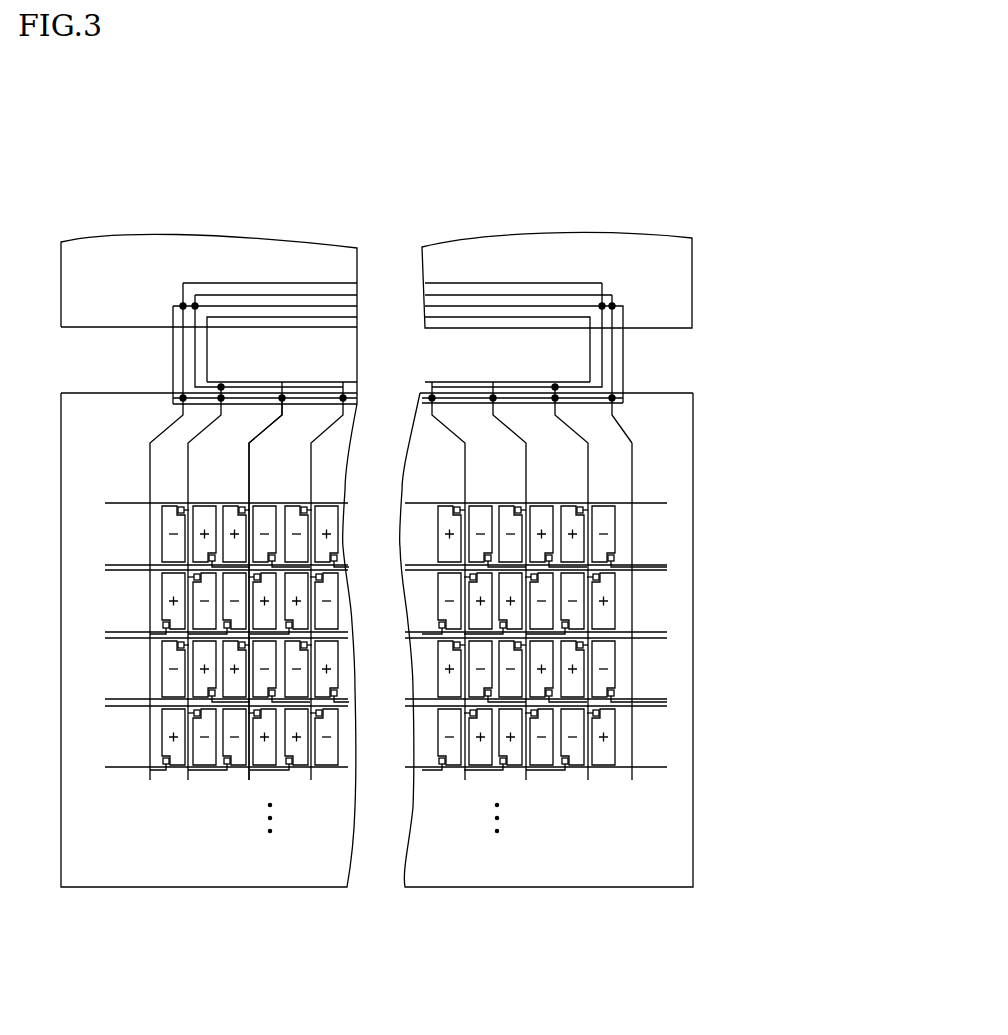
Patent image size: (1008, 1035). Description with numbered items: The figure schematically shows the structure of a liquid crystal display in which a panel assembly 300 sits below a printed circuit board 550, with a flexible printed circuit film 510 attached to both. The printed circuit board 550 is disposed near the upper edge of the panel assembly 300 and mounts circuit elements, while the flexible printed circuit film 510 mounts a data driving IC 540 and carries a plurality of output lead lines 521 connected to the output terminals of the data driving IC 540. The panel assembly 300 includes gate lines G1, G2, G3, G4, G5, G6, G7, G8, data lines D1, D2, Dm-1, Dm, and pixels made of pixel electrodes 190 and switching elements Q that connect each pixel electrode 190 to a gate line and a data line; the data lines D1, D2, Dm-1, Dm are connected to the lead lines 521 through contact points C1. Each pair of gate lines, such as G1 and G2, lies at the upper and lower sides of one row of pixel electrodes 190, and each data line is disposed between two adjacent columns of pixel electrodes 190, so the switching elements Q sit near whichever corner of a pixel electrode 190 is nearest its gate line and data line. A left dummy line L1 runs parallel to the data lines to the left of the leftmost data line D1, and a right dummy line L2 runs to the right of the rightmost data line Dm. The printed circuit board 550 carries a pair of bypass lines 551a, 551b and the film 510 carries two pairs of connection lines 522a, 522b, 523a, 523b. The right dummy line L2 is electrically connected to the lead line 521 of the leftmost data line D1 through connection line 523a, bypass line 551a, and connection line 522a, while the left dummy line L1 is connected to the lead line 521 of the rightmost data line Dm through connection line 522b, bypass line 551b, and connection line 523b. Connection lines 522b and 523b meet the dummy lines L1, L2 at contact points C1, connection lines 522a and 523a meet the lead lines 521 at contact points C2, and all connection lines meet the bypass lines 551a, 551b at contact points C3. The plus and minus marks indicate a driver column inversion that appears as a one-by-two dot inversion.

The printed circuit board 550 is at (61, 286).
The panel assembly 300 is at (693, 683).
The bypass line 551a is at (326, 295).
The bypass line 551b is at (292, 283).
The connection line 522a is at (183, 333).
The connection line 522b is at (195, 347).
The connection line 523a is at (613, 350).
The connection line 523b is at (603, 334).
The output lead lines 521 is at (343, 382).
The flexible printed circuit film 510 is at (207, 360).
The data driving IC 540 is at (181, 382).
The contact points C1 is at (173, 405).
The contact points C2 is at (173, 398).
The contact points C3 is at (195, 306).
The left dummy line L1 is at (150, 452).
The right dummy line L2 is at (636, 498).
The leftmost data line D1 is at (203, 436).
The data line D2 is at (265, 436).
The data line Dm-1 is at (572, 428).
The rightmost data line Dm is at (596, 440).
The gate line G1 is at (374, 502).
The gate line G2 is at (374, 554).
The gate line G3 is at (374, 583).
The gate line G4 is at (374, 622).
The gate line G5 is at (374, 649).
The gate line G6 is at (374, 690).
The gate line G7 is at (374, 717).
The gate line G8 is at (374, 759).
The switching element Q is at (178, 505).
The pixel electrode 190 is at (160, 522).